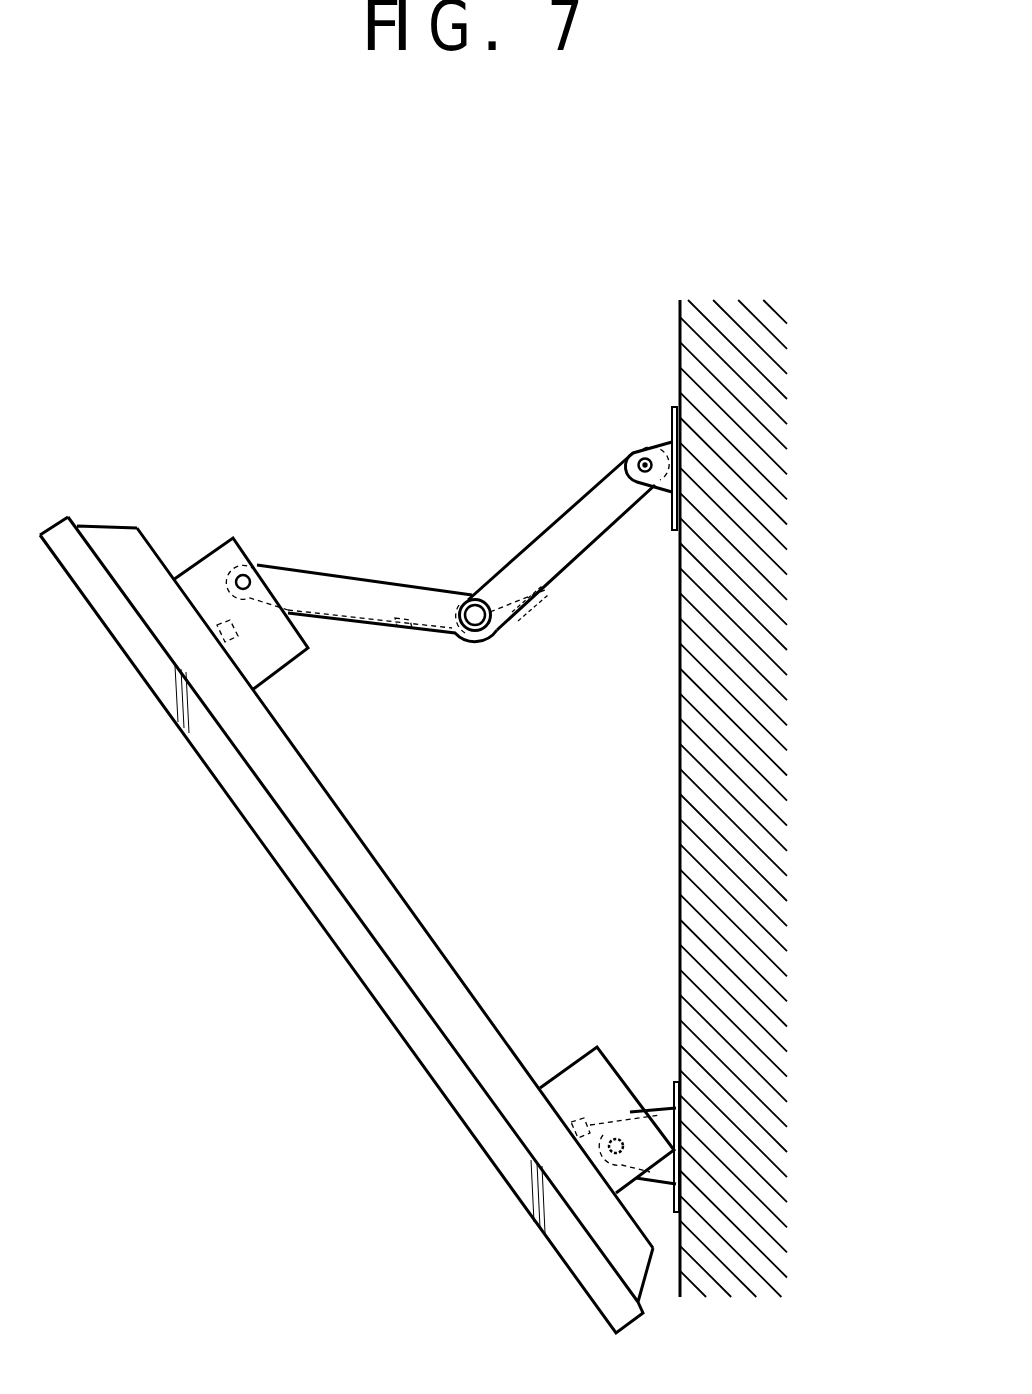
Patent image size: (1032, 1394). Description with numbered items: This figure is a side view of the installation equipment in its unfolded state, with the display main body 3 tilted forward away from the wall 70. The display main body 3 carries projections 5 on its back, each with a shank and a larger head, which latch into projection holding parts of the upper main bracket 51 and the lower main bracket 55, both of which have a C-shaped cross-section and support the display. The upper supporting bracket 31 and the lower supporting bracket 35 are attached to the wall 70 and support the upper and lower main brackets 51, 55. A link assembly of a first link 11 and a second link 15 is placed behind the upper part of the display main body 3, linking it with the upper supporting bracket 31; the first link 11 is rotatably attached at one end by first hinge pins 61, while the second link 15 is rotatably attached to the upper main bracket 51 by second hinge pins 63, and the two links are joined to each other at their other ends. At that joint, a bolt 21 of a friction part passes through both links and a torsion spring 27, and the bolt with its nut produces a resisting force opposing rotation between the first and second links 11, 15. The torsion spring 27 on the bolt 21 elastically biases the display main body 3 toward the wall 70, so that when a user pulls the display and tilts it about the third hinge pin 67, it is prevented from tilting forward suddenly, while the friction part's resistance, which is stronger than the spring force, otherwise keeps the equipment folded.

The display main body 3 is at (260, 840).
The projection 5 is at (222, 633).
The first link 11 is at (362, 580).
The second link 15 is at (565, 523).
The bolt 21 is at (480, 633).
The torsion spring 27 is at (526, 616).
The upper supporting bracket 31 is at (673, 407).
The lower supporting bracket 35 is at (673, 1097).
The upper main bracket 51 is at (197, 564).
The lower main bracket 55 is at (573, 1092).
The first hinge pin 61 is at (250, 578).
The second hinge pin 63 is at (641, 459).
The third hinge pin 67 is at (620, 1140).
The wall 70 is at (680, 757).